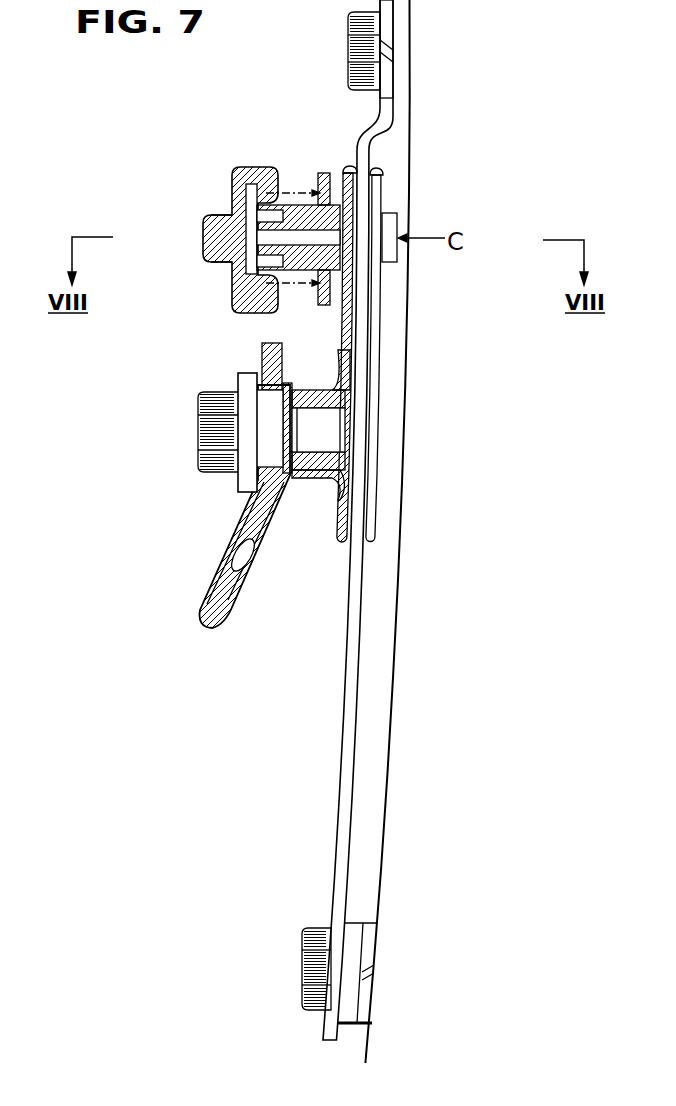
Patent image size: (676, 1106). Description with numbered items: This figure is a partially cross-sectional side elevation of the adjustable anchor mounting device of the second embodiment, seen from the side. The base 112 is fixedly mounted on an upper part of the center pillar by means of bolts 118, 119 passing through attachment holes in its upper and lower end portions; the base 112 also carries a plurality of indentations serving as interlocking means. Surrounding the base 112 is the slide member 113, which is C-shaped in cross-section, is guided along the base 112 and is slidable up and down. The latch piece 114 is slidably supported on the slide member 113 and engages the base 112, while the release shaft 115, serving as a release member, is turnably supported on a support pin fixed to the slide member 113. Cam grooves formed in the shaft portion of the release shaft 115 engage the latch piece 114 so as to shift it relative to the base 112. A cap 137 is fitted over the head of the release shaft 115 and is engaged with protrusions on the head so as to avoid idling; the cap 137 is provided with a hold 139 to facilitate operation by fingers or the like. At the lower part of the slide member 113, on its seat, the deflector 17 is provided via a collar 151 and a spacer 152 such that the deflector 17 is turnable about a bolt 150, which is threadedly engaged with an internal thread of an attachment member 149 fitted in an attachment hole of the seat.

The deflector 17 is at (200, 590).
The base 112 is at (342, 768).
The slide member 113 is at (383, 380).
The latch piece 114 is at (393, 227).
The release shaft 115 is at (298, 204).
The bolt 118 is at (350, 52).
The bolt 119 is at (302, 970).
The cap 137 is at (232, 183).
The hold 139 is at (205, 228).
The attachment member 149 is at (308, 393).
The bolt 150 is at (198, 411).
The collar 151 is at (243, 373).
The spacer 152 is at (290, 480).